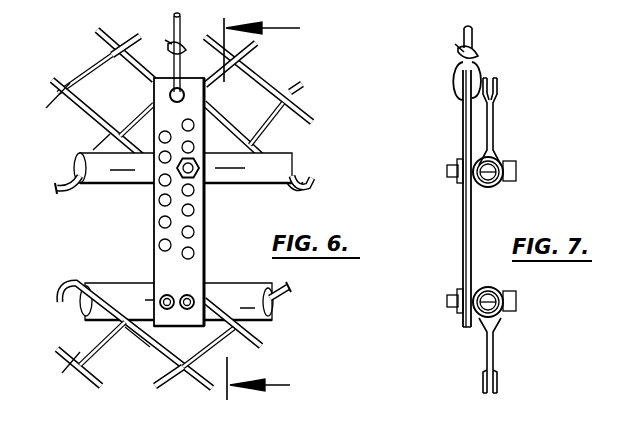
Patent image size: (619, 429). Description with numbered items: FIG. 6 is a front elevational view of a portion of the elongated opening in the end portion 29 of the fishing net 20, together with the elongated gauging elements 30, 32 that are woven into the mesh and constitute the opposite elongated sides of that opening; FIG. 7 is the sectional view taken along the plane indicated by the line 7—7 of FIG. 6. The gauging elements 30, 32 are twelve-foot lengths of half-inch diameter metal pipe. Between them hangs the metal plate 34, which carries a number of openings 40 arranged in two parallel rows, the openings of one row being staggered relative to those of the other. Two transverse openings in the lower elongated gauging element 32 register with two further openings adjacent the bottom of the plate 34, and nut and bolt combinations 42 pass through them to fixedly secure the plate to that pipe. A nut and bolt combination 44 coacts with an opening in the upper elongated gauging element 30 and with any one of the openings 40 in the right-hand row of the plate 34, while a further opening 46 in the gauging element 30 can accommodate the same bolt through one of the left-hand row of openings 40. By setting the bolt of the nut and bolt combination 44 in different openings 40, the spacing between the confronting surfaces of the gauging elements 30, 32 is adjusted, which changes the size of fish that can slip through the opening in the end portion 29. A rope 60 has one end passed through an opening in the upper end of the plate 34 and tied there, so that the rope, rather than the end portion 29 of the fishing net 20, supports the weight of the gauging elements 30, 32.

In FIG. 6, the fishing net 20 is at (154, 386).
In FIG. 7, the fishing net 20 is at (499, 386).
In FIG. 6, the end portion 29 is at (301, 107).
In FIG. 7, the end portion 29 is at (500, 93).
In FIG. 6, the elongated gauging element 30 is at (293, 161).
In FIG. 7, the elongated gauging element 30 is at (506, 154).
In FIG. 6, the elongated gauging element 32 is at (244, 292).
In FIG. 7, the elongated gauging element 32 is at (503, 290).
In FIG. 6, the metal plate 34 is at (160, 264).
In FIG. 7, the metal plate 34 is at (462, 230).
In FIG. 6, the openings 40 is at (194, 252).
In FIG. 6, the nut and bolt combinations 42 is at (186, 311).
In FIG. 7, the nut and bolt combinations 42 is at (457, 321).
In FIG. 6, the nut and bolt combination 44 is at (212, 136).
In FIG. 7, the nut and bolt combination 44 is at (452, 183).
In FIG. 6, the further opening 46 is at (140, 189).
In FIG. 6, the rope 60 is at (174, 17).
In FIG. 7, the rope 60 is at (474, 40).
In FIG. 6, the section line 7- 7 is at (271, 209).